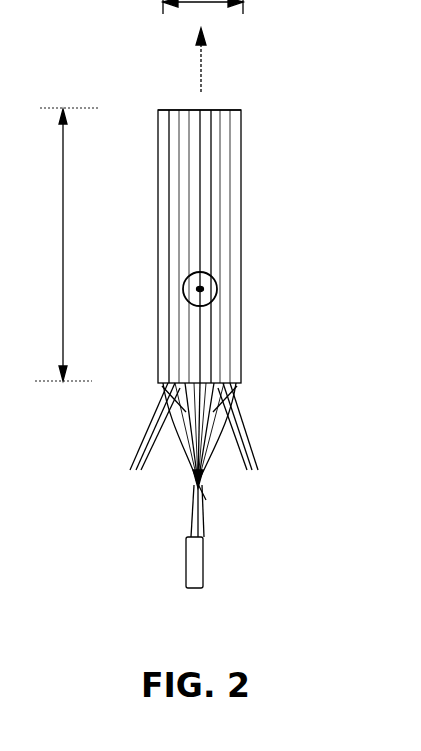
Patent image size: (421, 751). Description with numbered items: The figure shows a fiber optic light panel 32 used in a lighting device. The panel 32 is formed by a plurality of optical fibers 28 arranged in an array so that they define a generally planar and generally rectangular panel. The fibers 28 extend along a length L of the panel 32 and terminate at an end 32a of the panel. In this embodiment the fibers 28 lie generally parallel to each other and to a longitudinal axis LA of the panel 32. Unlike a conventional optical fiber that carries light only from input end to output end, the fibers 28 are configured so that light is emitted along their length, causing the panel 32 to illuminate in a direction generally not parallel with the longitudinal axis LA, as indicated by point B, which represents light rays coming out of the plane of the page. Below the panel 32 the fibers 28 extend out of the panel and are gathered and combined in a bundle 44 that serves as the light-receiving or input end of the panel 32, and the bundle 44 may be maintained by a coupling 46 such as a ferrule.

The longitudinal axis LA is at (203, 68).
The end of the panel 32a is at (222, 113).
The fiber optic light panel 32 is at (203, 232).
The length of the panel L is at (65, 166).
The point representing emitted light rays B is at (217, 285).
The optical fibers 28 is at (196, 439).
The fiber bundle 44 is at (201, 488).
The coupling 46 is at (204, 577).